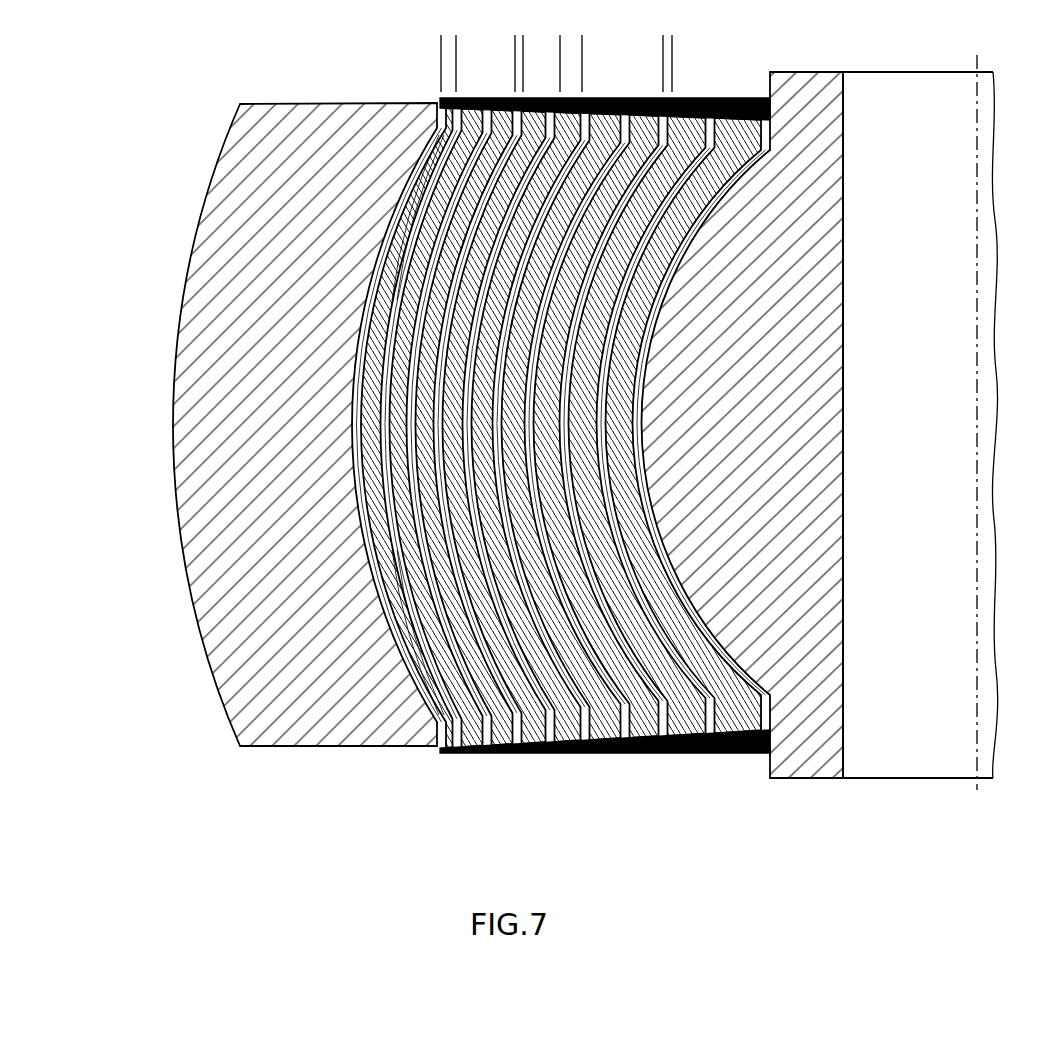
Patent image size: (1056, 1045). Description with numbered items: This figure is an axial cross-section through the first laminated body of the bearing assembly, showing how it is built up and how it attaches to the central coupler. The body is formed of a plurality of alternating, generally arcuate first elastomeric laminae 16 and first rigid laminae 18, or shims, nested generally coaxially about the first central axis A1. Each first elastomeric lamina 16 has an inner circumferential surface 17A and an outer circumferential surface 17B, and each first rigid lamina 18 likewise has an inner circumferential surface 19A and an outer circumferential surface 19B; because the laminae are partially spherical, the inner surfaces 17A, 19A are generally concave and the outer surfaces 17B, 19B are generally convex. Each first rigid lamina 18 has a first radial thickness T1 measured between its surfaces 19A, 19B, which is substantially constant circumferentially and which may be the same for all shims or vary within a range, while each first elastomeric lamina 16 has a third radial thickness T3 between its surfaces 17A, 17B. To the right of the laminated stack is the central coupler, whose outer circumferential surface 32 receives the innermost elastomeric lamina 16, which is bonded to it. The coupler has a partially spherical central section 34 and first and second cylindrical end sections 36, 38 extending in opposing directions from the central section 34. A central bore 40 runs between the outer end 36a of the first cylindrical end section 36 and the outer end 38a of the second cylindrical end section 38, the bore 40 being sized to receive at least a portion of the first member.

The first elastomeric laminae 16 is at (433, 740).
The inner circumferential surface of first elastomeric lamina 17A is at (406, 182).
The outer circumferential surface of first elastomeric lamina 17B is at (417, 158).
The first rigid laminae 18 is at (476, 758).
The inner circumferential surface of first rigid lamina 19A is at (430, 650).
The outer circumferential surface of first rigid lamina 19B is at (413, 675).
The outer circumferential surface of central coupler 32 is at (633, 372).
The partially spherical central section 34 is at (785, 340).
The first cylindrical end section 36 is at (815, 66).
The outer end of first cylindrical end section 36a is at (937, 70).
The second cylindrical end section 38 is at (808, 784).
The outer end of second cylindrical end section 38a is at (898, 780).
The central bore 40 is at (845, 105).
The first central axis A1 is at (977, 220).
The first radial thickness T1 is at (622, 60).
The third radial thickness T3 is at (710, 45).